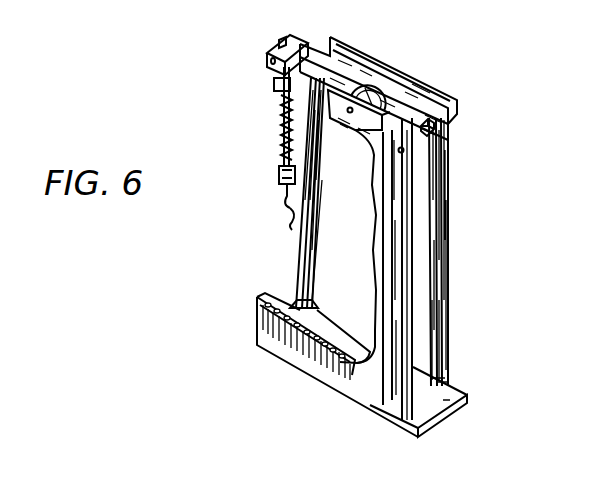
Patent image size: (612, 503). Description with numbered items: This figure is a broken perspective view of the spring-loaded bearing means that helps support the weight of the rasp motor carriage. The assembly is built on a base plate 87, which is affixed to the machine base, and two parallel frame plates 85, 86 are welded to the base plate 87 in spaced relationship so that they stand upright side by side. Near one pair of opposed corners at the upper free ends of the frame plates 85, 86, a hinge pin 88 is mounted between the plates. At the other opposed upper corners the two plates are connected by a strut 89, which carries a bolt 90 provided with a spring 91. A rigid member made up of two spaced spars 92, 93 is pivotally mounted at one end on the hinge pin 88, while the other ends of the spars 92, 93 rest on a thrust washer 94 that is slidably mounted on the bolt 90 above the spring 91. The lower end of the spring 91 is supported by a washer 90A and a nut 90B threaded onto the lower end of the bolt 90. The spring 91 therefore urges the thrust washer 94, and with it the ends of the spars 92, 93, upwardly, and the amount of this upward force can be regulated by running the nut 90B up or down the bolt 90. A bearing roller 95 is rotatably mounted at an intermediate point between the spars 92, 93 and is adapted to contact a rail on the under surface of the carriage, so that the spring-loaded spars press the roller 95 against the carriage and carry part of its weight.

The frame plate 85 is at (381, 395).
The frame plate 86 is at (453, 324).
The base plate 87 is at (435, 408).
The hinge pin 88 is at (436, 128).
The strut 89 is at (302, 40).
The bolt 90 is at (287, 192).
The washer 90A is at (282, 176).
The nut 90B is at (291, 228).
The spring 91 is at (283, 136).
The spar 92 is at (358, 124).
The spar 93 is at (419, 92).
The thrust washer 94 is at (277, 78).
The bearing roller 95 is at (384, 94).